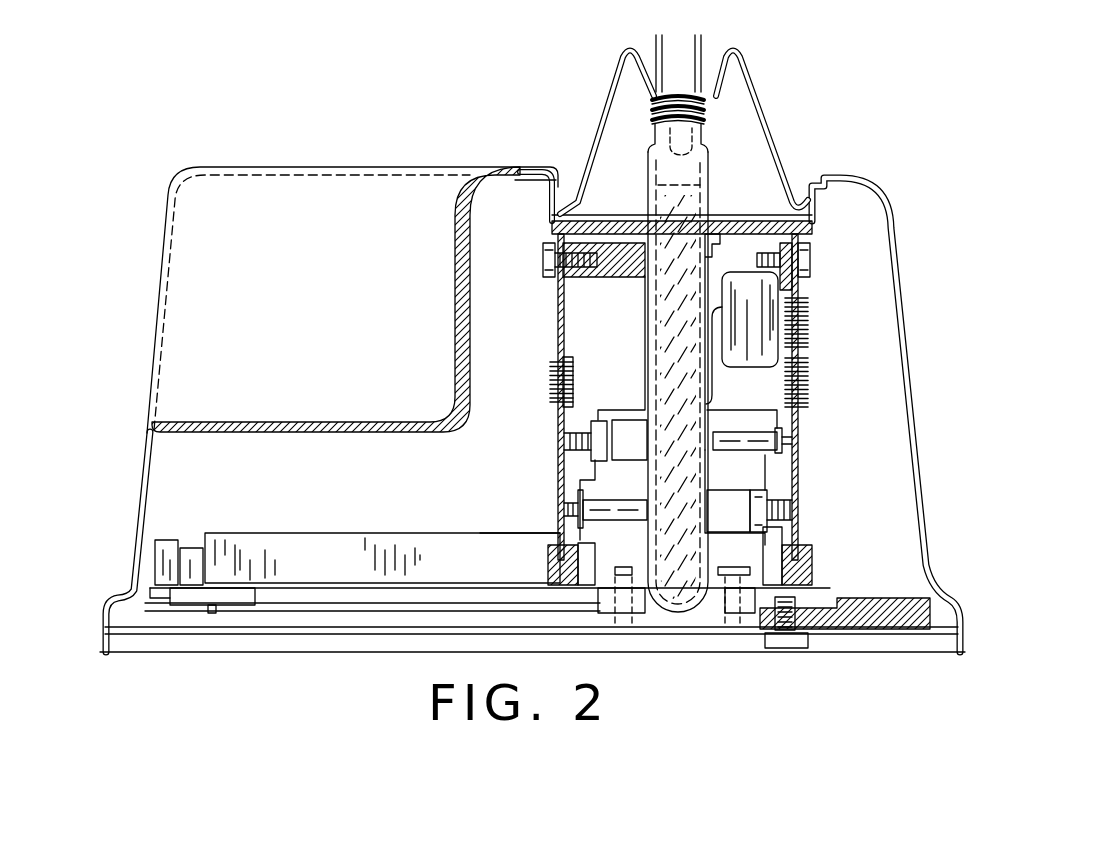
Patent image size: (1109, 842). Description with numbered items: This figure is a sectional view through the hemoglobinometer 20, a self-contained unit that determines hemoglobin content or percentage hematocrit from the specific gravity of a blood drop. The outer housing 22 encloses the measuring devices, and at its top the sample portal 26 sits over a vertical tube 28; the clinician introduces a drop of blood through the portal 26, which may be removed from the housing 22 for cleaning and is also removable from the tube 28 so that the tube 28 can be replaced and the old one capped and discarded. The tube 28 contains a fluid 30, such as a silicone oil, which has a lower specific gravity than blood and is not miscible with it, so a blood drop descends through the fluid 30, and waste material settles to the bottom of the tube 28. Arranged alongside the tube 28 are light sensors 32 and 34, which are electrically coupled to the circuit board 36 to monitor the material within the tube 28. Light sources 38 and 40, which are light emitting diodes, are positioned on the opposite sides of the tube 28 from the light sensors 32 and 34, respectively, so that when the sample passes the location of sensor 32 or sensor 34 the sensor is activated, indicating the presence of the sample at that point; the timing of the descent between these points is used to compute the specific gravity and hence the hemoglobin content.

The hemoglobinometer 20 is at (893, 183).
The housing 22 is at (490, 180).
The sample portal 26 is at (748, 82).
The tube 28 is at (706, 192).
The fluid 30 is at (684, 264).
The light sensor 32 is at (598, 441).
The light sensor 34 is at (760, 516).
The circuit board 36 is at (298, 550).
The light source 38 is at (757, 441).
The light source 40 is at (600, 508).